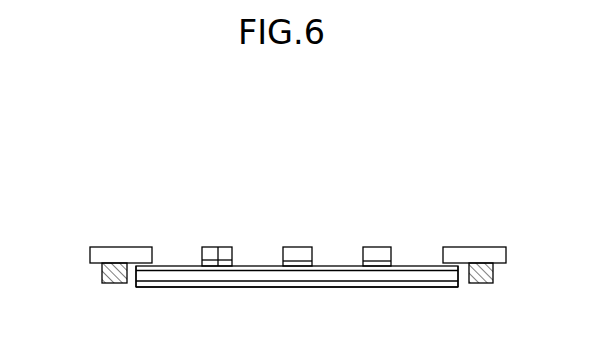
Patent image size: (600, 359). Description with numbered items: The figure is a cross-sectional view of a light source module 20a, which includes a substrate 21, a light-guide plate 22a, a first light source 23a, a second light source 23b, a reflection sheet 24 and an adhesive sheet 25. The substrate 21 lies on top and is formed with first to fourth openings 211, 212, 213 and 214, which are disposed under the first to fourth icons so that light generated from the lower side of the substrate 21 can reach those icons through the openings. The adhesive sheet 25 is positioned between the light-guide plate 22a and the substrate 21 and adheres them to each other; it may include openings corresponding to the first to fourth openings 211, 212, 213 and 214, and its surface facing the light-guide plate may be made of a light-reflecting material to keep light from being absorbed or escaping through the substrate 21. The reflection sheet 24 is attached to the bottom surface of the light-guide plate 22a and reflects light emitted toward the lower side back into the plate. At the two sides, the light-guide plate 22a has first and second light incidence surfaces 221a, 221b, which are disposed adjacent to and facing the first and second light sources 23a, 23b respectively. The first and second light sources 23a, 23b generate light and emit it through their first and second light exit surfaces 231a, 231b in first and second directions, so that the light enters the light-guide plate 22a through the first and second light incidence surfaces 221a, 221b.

The light source module 20a is at (400, 108).
The substrate 21 is at (95, 255).
The first opening 211 is at (181, 258).
The second opening 212 is at (260, 258).
The third opening 213 is at (337, 258).
The fourth opening 214 is at (418, 258).
The adhesive sheet 25 is at (220, 246).
The light-guide plate 22a is at (217, 273).
The first light incidence surface 221a is at (134, 277).
The second light incidence surface 221b is at (460, 271).
The first light source 23a is at (115, 284).
The second light source 23b is at (482, 284).
The first light exit surface 231a is at (130, 270).
The second light exit surface 231b is at (461, 270).
The reflection sheet 24 is at (257, 286).